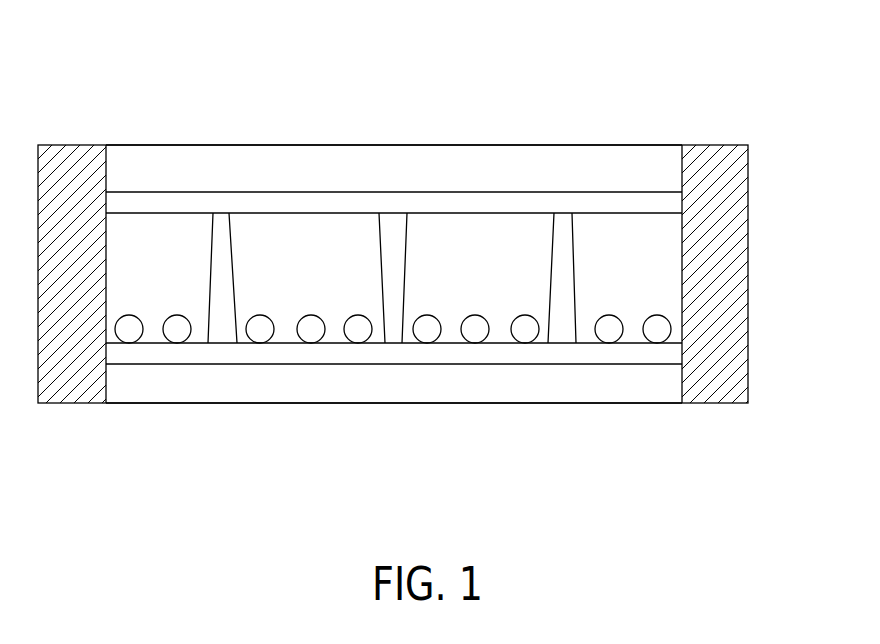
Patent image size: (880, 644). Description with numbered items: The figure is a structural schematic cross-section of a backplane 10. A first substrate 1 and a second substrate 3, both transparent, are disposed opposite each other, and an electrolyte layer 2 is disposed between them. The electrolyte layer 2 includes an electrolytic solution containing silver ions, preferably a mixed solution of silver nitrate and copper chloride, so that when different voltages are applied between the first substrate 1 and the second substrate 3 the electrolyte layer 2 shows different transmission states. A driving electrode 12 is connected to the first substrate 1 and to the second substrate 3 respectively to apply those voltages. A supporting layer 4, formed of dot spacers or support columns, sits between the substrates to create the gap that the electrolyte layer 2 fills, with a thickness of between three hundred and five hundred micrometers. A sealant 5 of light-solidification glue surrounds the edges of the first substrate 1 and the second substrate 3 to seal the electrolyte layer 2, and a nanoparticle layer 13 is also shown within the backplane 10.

The backplane 10 is at (115, 97).
The first substrate 1 is at (560, 165).
The driving electrode 12 is at (590, 202).
The electrolyte layer 2 is at (333, 257).
The second substrate 3 is at (300, 387).
The supporting layer 4 is at (560, 302).
The sealant 5 is at (748, 266).
The nanoparticle layer 13 is at (360, 336).